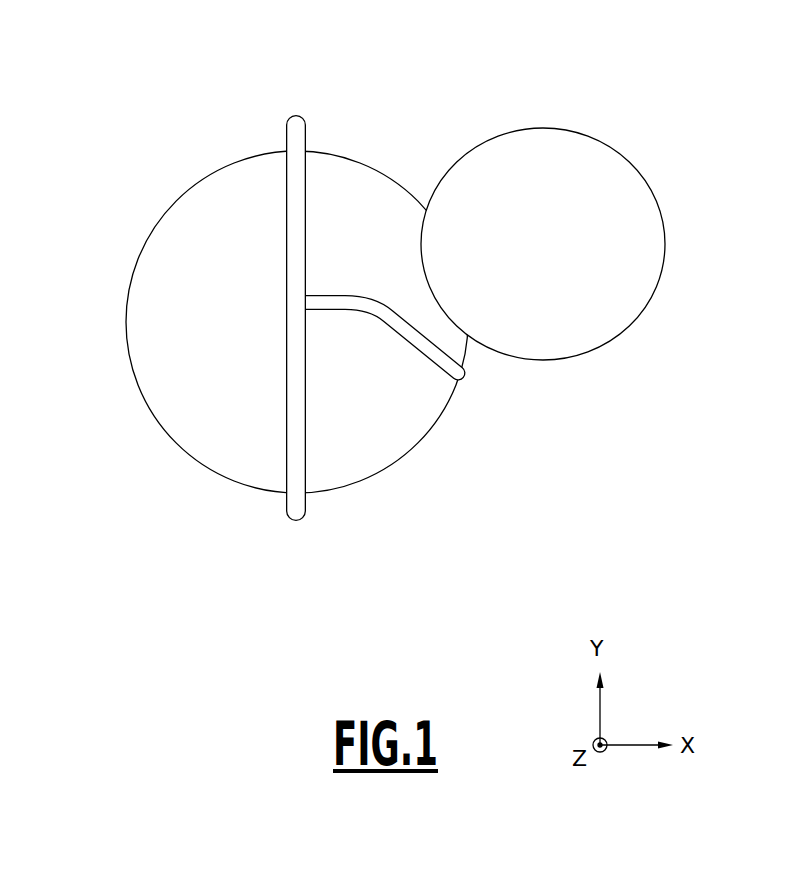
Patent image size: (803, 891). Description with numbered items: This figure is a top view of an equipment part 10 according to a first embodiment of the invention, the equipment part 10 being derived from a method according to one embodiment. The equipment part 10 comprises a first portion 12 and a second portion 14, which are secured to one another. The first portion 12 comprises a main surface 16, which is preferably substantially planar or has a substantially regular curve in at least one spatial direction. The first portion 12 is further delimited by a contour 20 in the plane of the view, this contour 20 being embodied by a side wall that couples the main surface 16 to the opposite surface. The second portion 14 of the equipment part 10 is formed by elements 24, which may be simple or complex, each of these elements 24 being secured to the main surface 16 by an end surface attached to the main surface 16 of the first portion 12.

The equipment part 10 is at (372, 272).
The first portion 12 is at (552, 102).
The second portion 14 is at (309, 201).
The main surface 16 is at (175, 240).
The contour 20 is at (602, 345).
The elements 24 is at (305, 460).